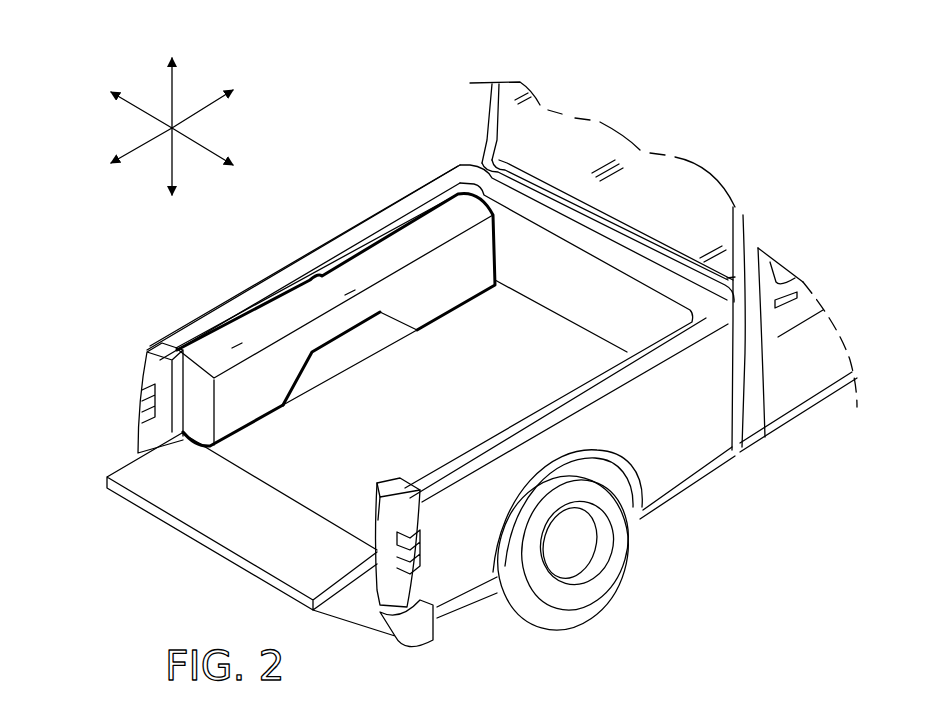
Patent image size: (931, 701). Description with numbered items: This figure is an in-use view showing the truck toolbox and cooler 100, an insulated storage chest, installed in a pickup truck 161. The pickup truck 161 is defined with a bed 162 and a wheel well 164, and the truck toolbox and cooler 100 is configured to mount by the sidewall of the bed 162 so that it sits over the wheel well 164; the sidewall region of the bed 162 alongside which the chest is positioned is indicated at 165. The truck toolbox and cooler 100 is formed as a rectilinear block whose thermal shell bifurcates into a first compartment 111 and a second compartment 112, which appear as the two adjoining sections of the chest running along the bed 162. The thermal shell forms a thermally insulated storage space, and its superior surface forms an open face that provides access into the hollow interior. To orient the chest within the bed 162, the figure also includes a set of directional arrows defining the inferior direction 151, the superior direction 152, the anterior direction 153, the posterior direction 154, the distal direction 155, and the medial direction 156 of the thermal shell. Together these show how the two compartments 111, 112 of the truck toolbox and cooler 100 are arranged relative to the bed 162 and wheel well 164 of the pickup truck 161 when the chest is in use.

The truck toolbox and cooler 100 is at (207, 352).
The first compartment 111 is at (227, 420).
The second compartment 112 is at (447, 290).
The inferior direction 151 is at (175, 186).
The superior direction 152 is at (165, 69).
The anterior direction 153 is at (236, 97).
The posterior direction 154 is at (100, 157).
The distal direction 155 is at (113, 89).
The medial direction 156 is at (236, 161).
The pickup truck 161 is at (690, 450).
The bed 162 is at (570, 360).
The wheel well 164 is at (360, 352).
The bed side wall 165 is at (385, 220).